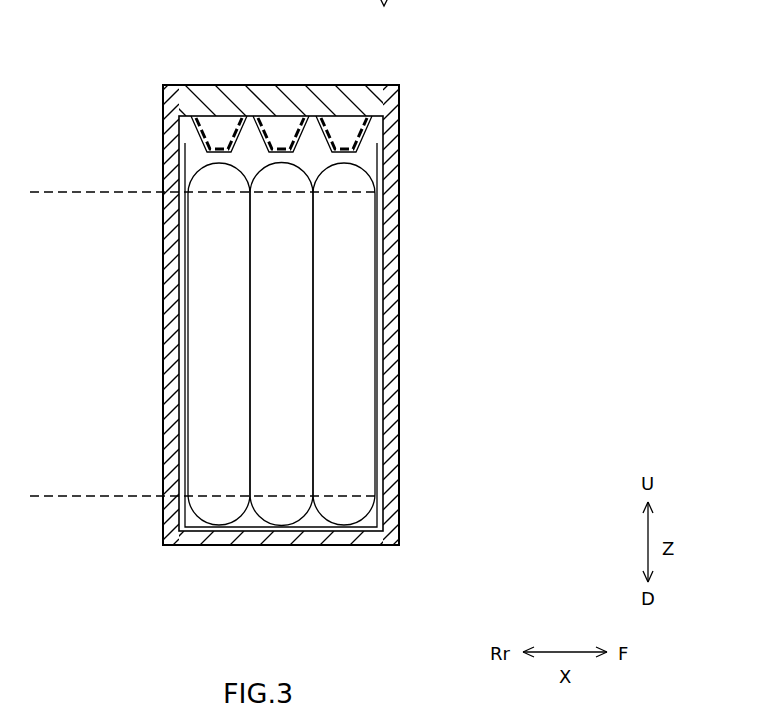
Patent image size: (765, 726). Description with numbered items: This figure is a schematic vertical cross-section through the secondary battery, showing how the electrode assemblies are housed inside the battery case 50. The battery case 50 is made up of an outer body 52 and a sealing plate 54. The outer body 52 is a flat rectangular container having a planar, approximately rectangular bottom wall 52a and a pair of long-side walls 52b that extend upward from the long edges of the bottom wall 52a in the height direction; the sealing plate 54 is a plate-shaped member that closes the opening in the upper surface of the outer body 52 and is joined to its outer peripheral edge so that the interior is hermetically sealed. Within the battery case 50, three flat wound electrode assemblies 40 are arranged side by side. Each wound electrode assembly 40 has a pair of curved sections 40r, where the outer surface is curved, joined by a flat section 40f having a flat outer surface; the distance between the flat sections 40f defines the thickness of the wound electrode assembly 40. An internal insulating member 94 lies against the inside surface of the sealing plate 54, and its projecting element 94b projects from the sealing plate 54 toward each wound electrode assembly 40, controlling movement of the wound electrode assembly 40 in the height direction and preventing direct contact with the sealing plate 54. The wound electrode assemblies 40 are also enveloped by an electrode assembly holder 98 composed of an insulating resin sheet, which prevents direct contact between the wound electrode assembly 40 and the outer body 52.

The wound electrode assembly 40 is at (228, 270).
The curved section 40r is at (325, 162).
The flat section 40f is at (84, 192).
The battery case 50 is at (318, 316).
The outer body 52 is at (391, 308).
The bottom wall 52a is at (377, 545).
The long-side wall 52b is at (401, 452).
The sealing plate 54 is at (374, 85).
The internal insulating member 94 is at (216, 139).
The projecting element 94b is at (218, 152).
The electrode assembly holder 98 is at (377, 163).